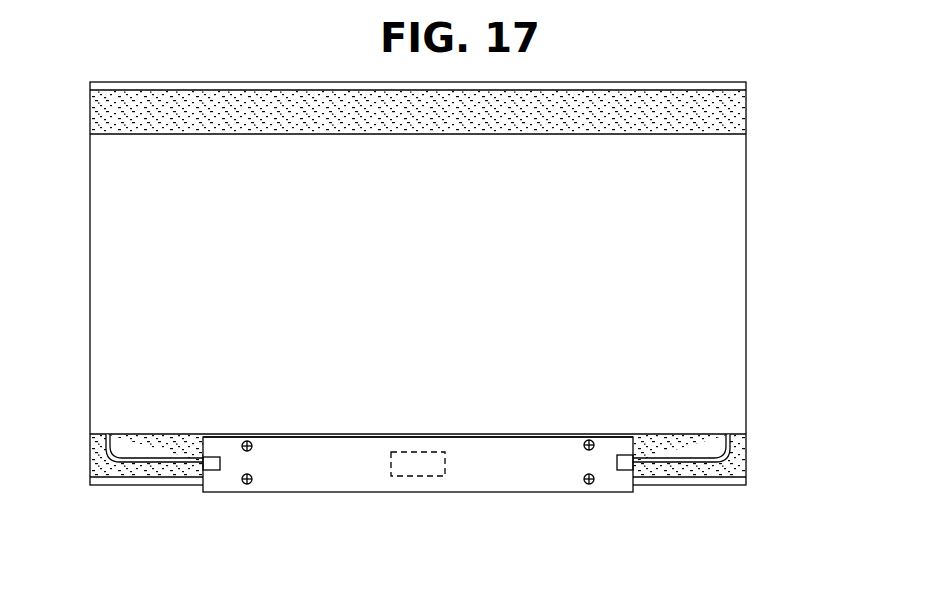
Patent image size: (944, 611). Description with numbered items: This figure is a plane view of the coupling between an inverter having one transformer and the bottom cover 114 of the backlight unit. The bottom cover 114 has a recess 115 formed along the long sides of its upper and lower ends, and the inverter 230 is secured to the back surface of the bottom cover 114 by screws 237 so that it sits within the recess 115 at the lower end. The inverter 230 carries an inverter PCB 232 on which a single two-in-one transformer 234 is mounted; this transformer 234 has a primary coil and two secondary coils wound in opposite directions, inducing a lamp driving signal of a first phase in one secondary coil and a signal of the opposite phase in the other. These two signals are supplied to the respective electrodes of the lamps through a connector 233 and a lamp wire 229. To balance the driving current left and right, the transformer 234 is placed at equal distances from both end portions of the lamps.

The bottom cover 114 is at (733, 270).
The recess 115 is at (432, 122).
The lamp wire 229 is at (140, 463).
The inverter 230 is at (352, 497).
The inverter PCB 232 is at (421, 434).
The connector 233 is at (212, 471).
The transformer 234 is at (420, 477).
The screws 237 is at (253, 477).